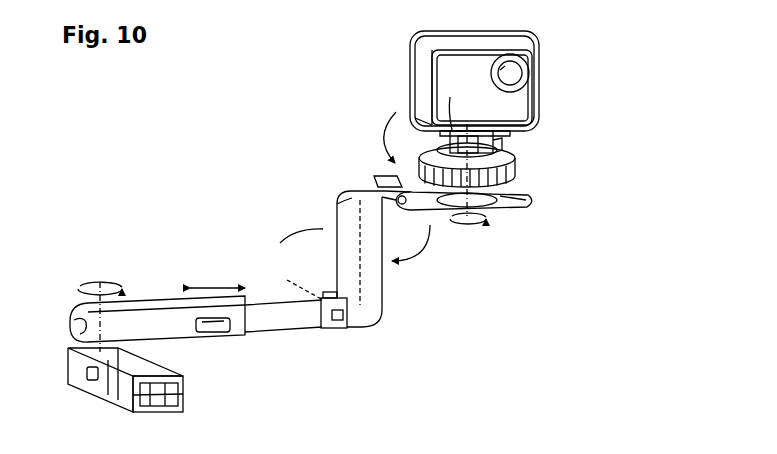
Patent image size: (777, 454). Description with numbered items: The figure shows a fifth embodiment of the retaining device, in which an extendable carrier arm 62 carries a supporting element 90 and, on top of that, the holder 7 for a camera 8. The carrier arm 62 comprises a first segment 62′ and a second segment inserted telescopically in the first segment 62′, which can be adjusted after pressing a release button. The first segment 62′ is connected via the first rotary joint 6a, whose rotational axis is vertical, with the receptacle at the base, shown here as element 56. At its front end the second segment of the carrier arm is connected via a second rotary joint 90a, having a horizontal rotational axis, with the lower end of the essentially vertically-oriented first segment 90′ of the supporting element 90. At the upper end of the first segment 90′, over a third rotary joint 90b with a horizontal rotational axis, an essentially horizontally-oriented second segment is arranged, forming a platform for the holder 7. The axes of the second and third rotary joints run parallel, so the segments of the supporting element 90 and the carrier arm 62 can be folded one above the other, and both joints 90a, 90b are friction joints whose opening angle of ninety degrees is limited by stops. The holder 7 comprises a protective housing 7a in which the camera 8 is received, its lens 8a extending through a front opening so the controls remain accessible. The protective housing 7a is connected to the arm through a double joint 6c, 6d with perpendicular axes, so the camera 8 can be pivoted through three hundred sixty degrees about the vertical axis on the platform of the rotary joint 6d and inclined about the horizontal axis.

The holder 7 is at (481, 123).
The protective housing 7a is at (430, 72).
The camera 8 is at (469, 81).
The lens 8a is at (520, 75).
The double joint 6c is at (453, 102).
The rotary joint 6d is at (519, 172).
The supporting element 90 is at (426, 261).
The second rotary joint 90a is at (327, 330).
The third rotary joint 90b is at (398, 198).
The first segment 90′ is at (346, 208).
The carrier arm 62 is at (196, 319).
The first segment 62′ is at (157, 303).
The base connector 56 is at (103, 397).
The first rotary joint 6a is at (80, 353).